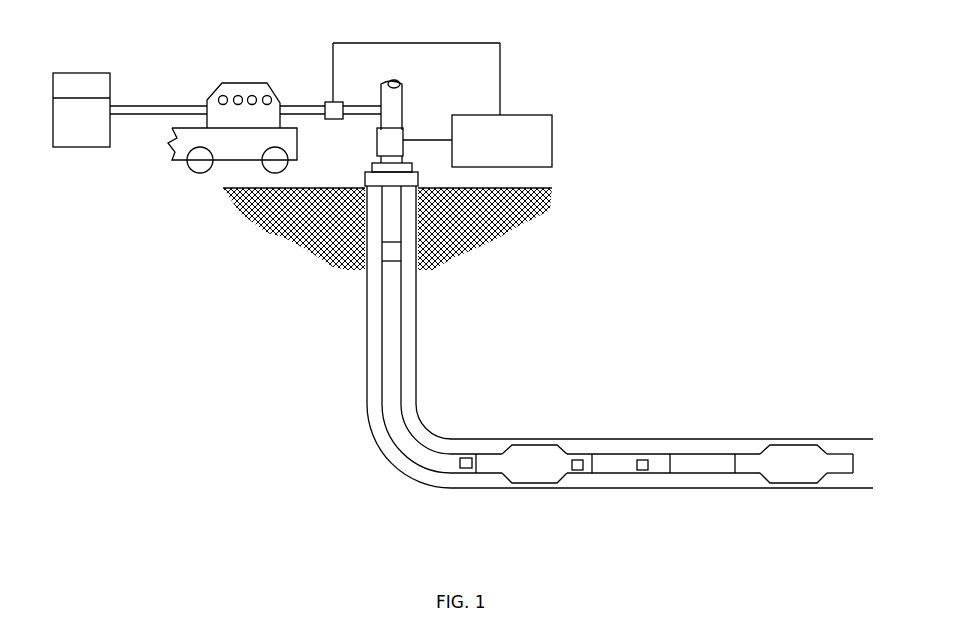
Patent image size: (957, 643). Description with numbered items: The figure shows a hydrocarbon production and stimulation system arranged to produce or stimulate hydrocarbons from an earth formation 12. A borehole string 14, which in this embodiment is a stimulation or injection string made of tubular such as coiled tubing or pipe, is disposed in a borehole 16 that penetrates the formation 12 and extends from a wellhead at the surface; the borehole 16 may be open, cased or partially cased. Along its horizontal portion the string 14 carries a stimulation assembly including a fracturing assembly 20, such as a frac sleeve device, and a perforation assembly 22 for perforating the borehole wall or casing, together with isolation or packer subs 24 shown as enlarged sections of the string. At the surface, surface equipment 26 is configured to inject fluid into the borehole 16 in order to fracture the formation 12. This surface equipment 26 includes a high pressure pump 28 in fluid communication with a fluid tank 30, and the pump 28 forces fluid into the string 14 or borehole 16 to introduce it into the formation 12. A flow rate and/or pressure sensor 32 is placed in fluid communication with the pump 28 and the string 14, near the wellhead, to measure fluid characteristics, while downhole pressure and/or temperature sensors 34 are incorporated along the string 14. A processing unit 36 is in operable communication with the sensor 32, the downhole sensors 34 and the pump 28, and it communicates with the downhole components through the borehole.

The earth formation 12 is at (300, 236).
The borehole string 14 is at (392, 352).
The borehole 16 is at (370, 421).
The fracturing assembly 20 is at (618, 473).
The perforation assembly 22 is at (714, 467).
The packer sub 24 is at (521, 448).
The surface equipment 26 is at (208, 56).
The high pressure pump 28 is at (273, 94).
The fluid tank 30 is at (75, 143).
The flow rate and/or pressure sensor 32 is at (381, 139).
The pressure and/or temperature sensor 34 is at (467, 470).
The processing unit 36 is at (514, 155).